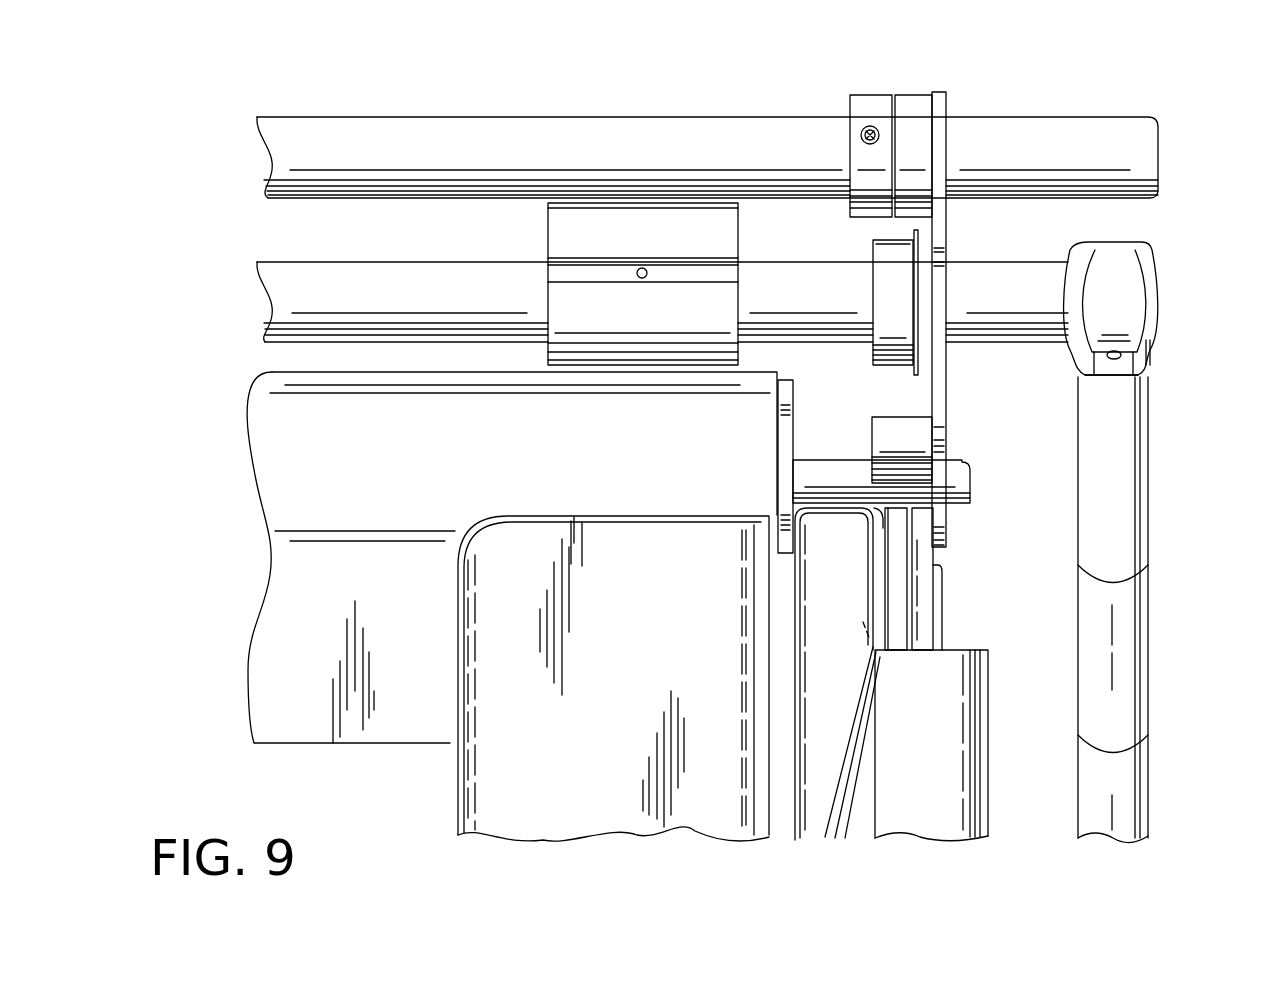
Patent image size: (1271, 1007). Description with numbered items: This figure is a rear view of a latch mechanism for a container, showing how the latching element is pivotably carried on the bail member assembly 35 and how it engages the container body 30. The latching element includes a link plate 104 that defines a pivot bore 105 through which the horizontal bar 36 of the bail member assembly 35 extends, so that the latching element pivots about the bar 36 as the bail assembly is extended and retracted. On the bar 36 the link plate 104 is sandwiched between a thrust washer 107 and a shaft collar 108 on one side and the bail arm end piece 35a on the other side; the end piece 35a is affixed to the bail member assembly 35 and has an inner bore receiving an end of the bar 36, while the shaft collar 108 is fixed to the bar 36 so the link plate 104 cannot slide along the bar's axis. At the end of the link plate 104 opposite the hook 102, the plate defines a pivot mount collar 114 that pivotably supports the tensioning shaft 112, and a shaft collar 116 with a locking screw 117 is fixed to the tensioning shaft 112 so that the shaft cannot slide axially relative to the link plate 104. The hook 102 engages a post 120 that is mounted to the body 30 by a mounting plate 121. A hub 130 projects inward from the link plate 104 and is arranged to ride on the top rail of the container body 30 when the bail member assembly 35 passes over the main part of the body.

The body 30 is at (689, 800).
The bail member assembly 35 is at (1122, 505).
The bail arm end piece 35a is at (1133, 282).
The horizontal bar 36 is at (380, 282).
The hook 102 is at (945, 535).
The link plate 104 is at (940, 379).
The pivot bore 105 is at (925, 298).
The thrust washer 107 is at (917, 228).
The shaft collar 108 is at (887, 250).
The tensioning shaft 112 is at (586, 127).
The pivot mount collar 114 is at (913, 120).
The shaft collar 116 is at (868, 100).
The locking screw 117 is at (863, 133).
The post 120 is at (967, 505).
The mounting plate 121 is at (793, 540).
The hub 130 is at (908, 435).